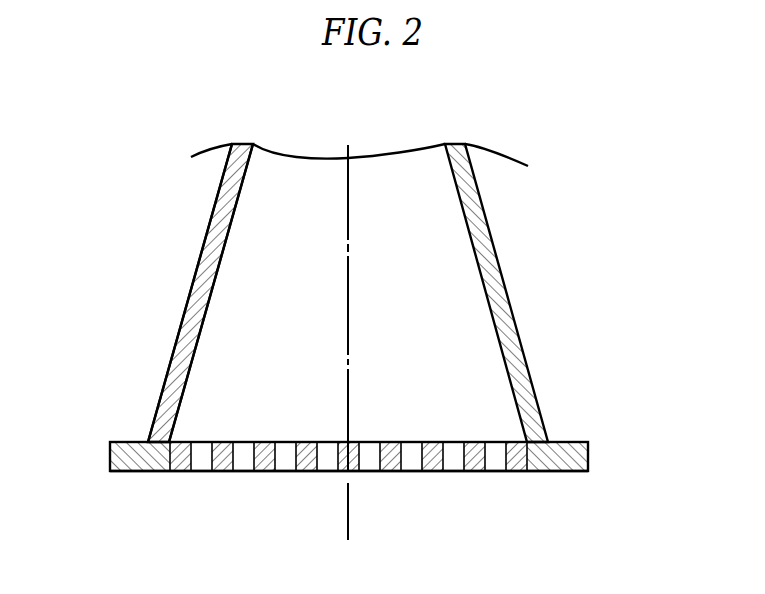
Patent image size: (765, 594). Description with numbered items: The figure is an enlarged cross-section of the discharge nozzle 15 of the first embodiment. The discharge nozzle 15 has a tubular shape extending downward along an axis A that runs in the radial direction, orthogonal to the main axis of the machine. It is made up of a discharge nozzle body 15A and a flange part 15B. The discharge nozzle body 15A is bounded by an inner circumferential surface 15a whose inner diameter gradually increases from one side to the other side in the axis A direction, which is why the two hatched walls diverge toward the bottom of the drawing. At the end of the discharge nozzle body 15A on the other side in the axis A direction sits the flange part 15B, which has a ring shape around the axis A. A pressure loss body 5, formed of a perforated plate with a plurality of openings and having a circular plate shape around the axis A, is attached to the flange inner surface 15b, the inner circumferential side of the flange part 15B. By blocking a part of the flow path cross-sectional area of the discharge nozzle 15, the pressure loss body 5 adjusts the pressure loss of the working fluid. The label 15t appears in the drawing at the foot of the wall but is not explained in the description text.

The discharge nozzle 15 is at (365, 359).
The discharge nozzle body 15A is at (500, 255).
The flange part 15B is at (572, 442).
The inner circumferential surface 15a is at (213, 310).
The flange inner surface 15b is at (190, 471).
The corner portion 15t is at (147, 440).
The pressure loss body 5 is at (430, 472).
The axis A is at (349, 145).